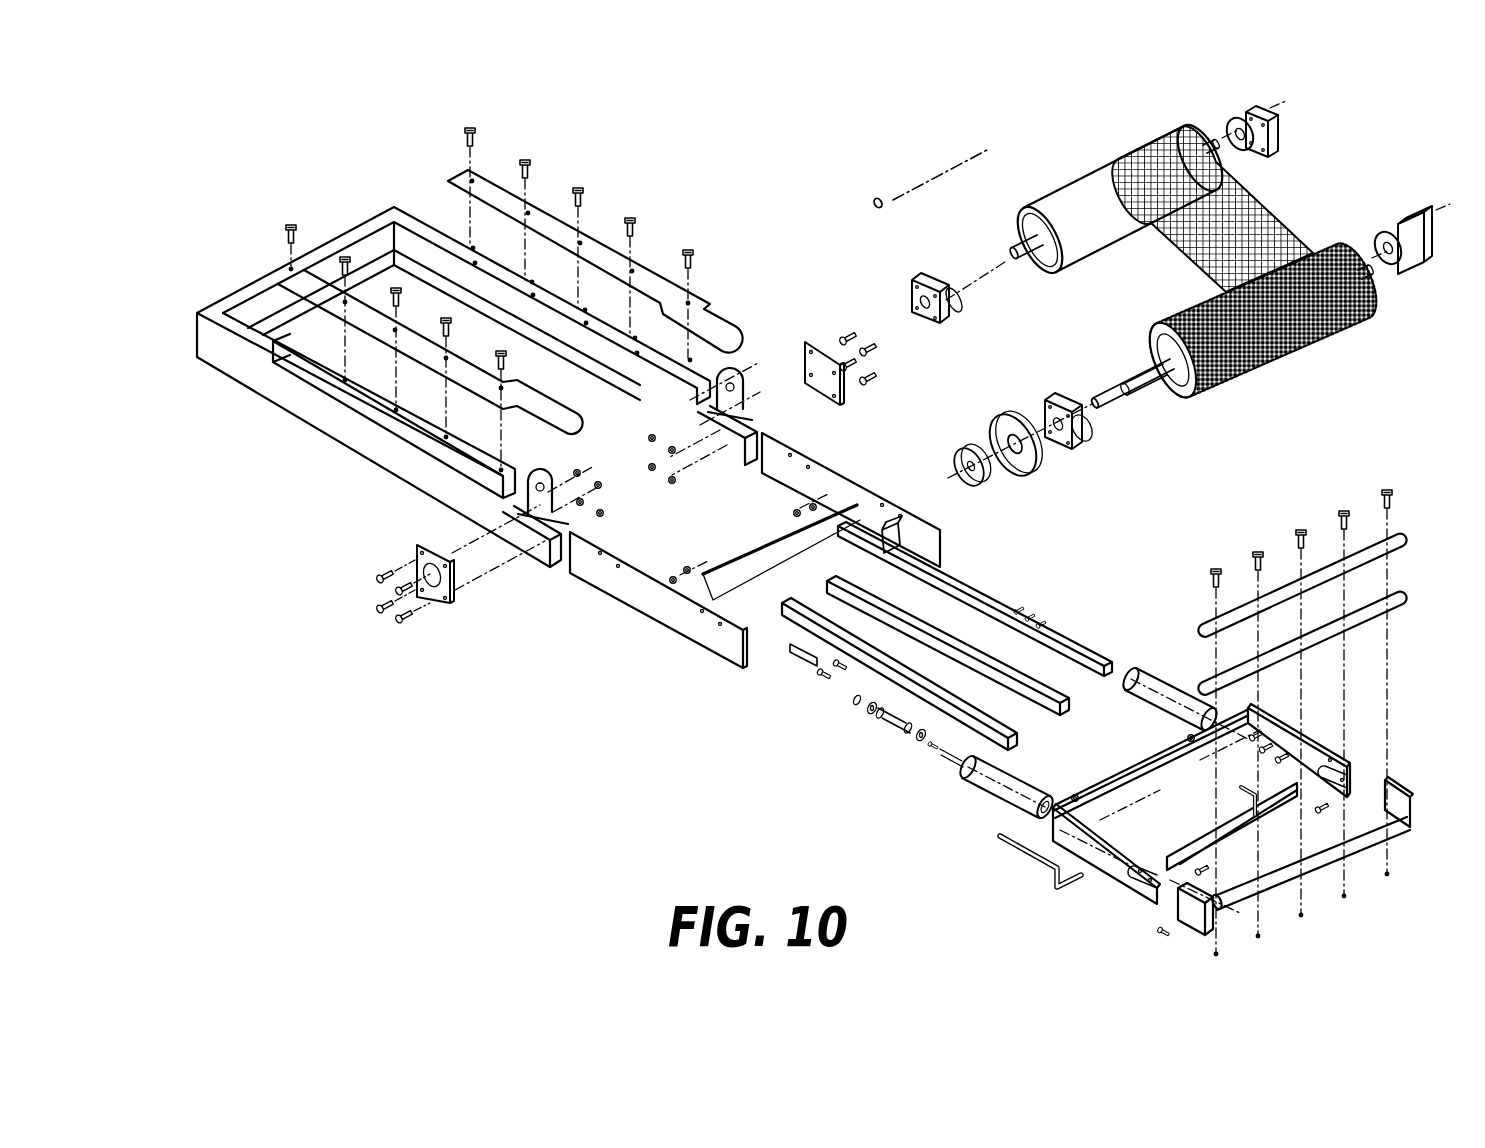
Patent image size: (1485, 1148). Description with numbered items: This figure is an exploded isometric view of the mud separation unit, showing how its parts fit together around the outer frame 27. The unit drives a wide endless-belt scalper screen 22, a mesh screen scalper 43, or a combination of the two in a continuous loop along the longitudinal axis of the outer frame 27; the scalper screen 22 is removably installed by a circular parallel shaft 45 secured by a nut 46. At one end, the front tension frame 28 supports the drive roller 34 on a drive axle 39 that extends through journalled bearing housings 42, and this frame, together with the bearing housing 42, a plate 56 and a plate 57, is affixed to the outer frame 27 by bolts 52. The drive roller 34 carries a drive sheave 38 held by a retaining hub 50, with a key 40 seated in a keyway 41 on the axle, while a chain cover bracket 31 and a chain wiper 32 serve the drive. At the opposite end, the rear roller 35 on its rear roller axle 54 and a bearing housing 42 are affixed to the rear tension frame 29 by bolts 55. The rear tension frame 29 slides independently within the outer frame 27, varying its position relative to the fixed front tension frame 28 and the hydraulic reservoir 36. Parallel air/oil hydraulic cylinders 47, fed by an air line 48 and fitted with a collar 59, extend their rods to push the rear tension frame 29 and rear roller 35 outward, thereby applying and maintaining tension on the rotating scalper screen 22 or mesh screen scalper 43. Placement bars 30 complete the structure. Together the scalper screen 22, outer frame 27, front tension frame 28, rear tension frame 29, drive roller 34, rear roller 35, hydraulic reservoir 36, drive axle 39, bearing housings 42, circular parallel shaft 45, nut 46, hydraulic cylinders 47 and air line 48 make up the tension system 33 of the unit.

The scalper screen 22 is at (471, 381).
The outer frame 27 is at (343, 232).
The front tension frame 28 is at (1110, 881).
The rear tension frame 29 is at (665, 612).
The placement bars 30 is at (855, 680).
The chain cover bracket 31 is at (597, 234).
The chain wiper 32 is at (1360, 860).
The tension system 33 is at (307, 422).
The drive roller 34 is at (1310, 333).
The rear roller 35 is at (1092, 166).
The hydraulic reservoir 36 is at (1237, 842).
The drive sheave 38 is at (1040, 476).
The drive axle 39 is at (1152, 386).
The key 40 is at (1118, 431).
The keyway 41 is at (1118, 396).
The bearing housing 42 is at (946, 326).
The mesh screen scalper 43 is at (965, 597).
The circular parallel shaft 45 is at (940, 175).
The nut 46 is at (876, 198).
The hydraulic cylinders 47 is at (977, 789).
The air line 48 is at (1018, 852).
The retaining hub 50 is at (985, 485).
The bolts 52 is at (853, 331).
The rear roller axle 54 is at (1034, 266).
The bolts 55 is at (770, 482).
The plate 56 is at (805, 341).
The plate 57 is at (455, 592).
The collar 59 is at (885, 726).